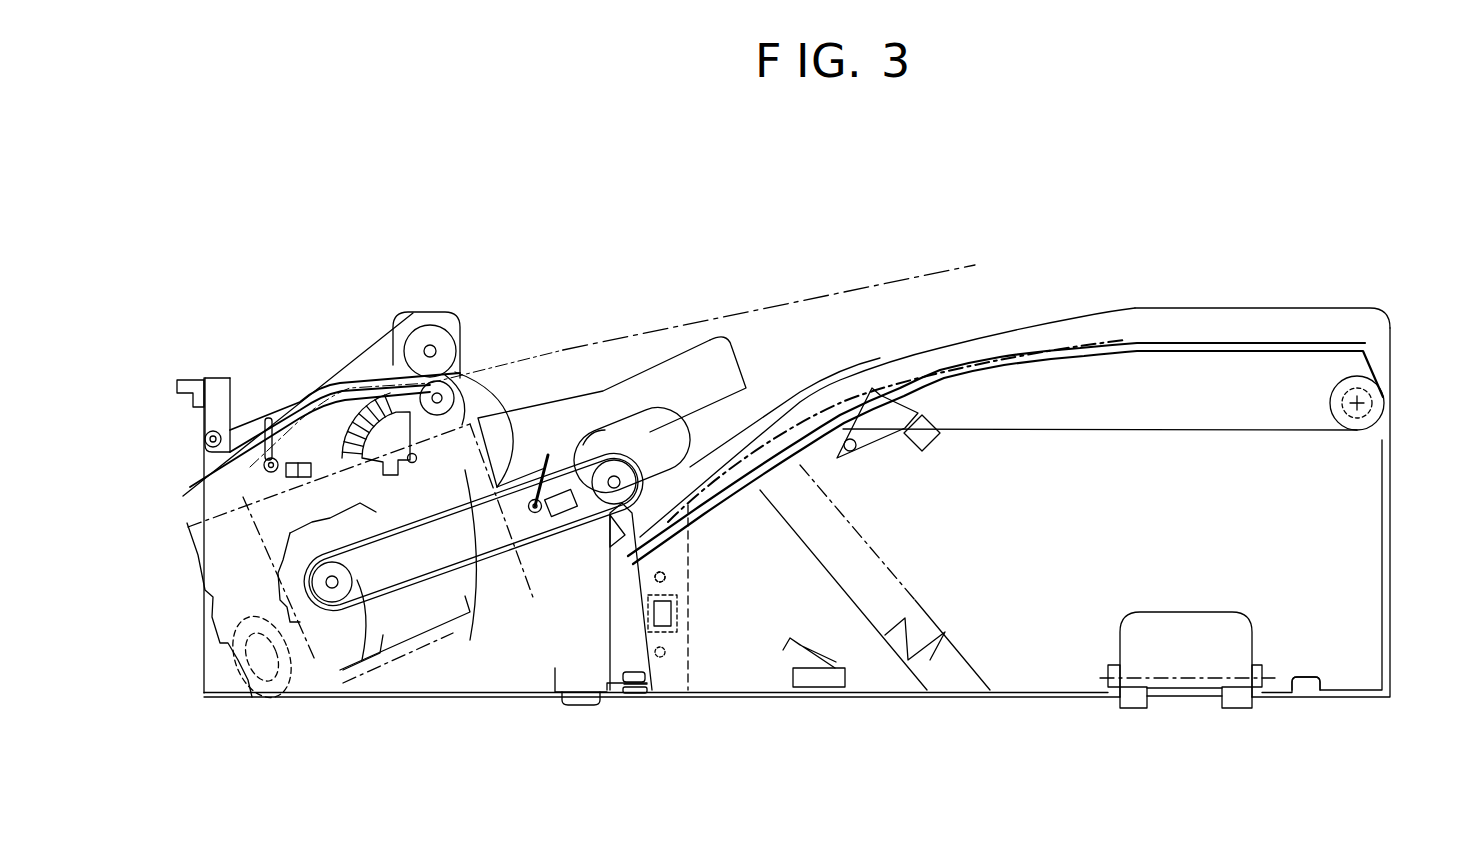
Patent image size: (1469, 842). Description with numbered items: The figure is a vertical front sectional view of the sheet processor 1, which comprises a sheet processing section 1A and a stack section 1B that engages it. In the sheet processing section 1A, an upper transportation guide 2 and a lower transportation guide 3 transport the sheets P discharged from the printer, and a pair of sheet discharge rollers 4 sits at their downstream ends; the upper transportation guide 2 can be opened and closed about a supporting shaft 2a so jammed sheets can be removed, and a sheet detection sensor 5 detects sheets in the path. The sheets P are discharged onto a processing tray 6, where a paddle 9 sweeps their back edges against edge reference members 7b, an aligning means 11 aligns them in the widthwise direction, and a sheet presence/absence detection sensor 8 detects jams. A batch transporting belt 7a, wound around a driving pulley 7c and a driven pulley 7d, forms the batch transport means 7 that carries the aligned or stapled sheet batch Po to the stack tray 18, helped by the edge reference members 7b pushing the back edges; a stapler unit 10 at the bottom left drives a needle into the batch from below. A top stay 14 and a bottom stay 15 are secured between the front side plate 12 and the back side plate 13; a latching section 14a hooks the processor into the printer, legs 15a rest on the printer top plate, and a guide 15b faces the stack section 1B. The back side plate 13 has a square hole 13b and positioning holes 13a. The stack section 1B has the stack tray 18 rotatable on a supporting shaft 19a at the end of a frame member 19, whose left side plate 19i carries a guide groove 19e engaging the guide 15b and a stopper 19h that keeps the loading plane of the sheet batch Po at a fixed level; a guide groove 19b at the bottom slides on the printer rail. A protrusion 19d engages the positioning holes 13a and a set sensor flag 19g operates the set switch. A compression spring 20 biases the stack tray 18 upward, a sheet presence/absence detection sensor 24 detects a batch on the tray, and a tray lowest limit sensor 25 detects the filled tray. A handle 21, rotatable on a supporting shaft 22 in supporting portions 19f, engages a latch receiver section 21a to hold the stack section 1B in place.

The sheet processor 1 is at (785, 240).
The sheet processing section 1A is at (548, 272).
The stack section 1B is at (1183, 328).
The upper transportation guide 2 is at (328, 398).
The supporting shaft 2a is at (222, 430).
The lower transportation guide 3 is at (345, 430).
The pair of sheet discharge rollers 4 is at (430, 348).
The sheet detection sensor 5 is at (287, 446).
The processing tray 6 is at (500, 485).
The transfer belt 7 is at (495, 540).
The batch transporting belt 7a is at (490, 600).
The edge reference member 7b is at (378, 590).
The driving pulley 7c is at (340, 610).
The driven pulley 7d is at (597, 447).
The sheet presence/absence detection sensor 8 is at (542, 522).
The paddle 9 is at (463, 420).
The stapler unit 10 is at (233, 617).
The aligning means 11 is at (700, 378).
The front side plate 12 is at (648, 430).
The back side plate 13 is at (672, 443).
The positioning holes 13a is at (668, 578).
The square hole 13b is at (680, 605).
The top stay 14 is at (212, 372).
The latching section 14a is at (183, 378).
The bottom stay 15 is at (555, 690).
The legs 15a is at (612, 683).
The guide 15b is at (650, 694).
The stack tray 18 is at (1000, 390).
The frame member 19 is at (1060, 695).
The supporting shaft 19a is at (1372, 405).
The guide groove 19b is at (1305, 694).
The protrusion 19d is at (677, 557).
The guide groove 19e is at (628, 664).
The supporting portions 19f is at (1108, 672).
The set sensor flag 19g is at (674, 615).
The stopper 19h is at (655, 525).
The left side plate 19i is at (658, 678).
The compression spring 20 is at (905, 625).
The handle 21 is at (1168, 662).
The latch receiver section 21a is at (1128, 705).
The supporting shaft 22 is at (1197, 680).
The sheet presence/absence detection sensor 24 is at (882, 452).
The tray lowest limit sensor 25 is at (820, 690).
The sheets P is at (178, 500).
The sheet batch Po is at (697, 397).